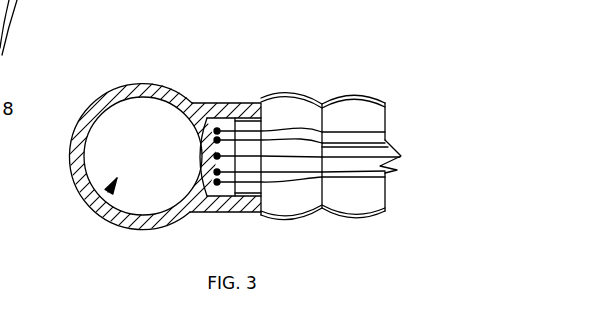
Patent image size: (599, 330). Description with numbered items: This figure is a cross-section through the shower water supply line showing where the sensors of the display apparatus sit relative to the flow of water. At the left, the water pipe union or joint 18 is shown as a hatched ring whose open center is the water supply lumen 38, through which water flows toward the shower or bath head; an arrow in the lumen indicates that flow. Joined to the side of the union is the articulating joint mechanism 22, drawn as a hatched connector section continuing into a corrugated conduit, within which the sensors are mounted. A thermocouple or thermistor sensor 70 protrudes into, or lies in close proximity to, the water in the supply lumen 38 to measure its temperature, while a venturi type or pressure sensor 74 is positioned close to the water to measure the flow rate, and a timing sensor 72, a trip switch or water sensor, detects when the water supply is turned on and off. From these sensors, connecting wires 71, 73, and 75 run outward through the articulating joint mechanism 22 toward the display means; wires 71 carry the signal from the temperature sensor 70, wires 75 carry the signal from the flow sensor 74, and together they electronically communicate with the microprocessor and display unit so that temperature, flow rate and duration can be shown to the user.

The water pipe union or joint 18 is at (140, 83).
The timing sensor 72 is at (199, 134).
The water supply lumen 38 is at (110, 192).
The thermocouple or thermistor sensor 70 is at (207, 157).
The venturi type or pressure sensor 74 is at (207, 182).
The articulating joint mechanism 22 is at (348, 95).
The connecting wires 73 is at (344, 148).
The wires 71 is at (395, 168).
The wires 75 is at (349, 175).